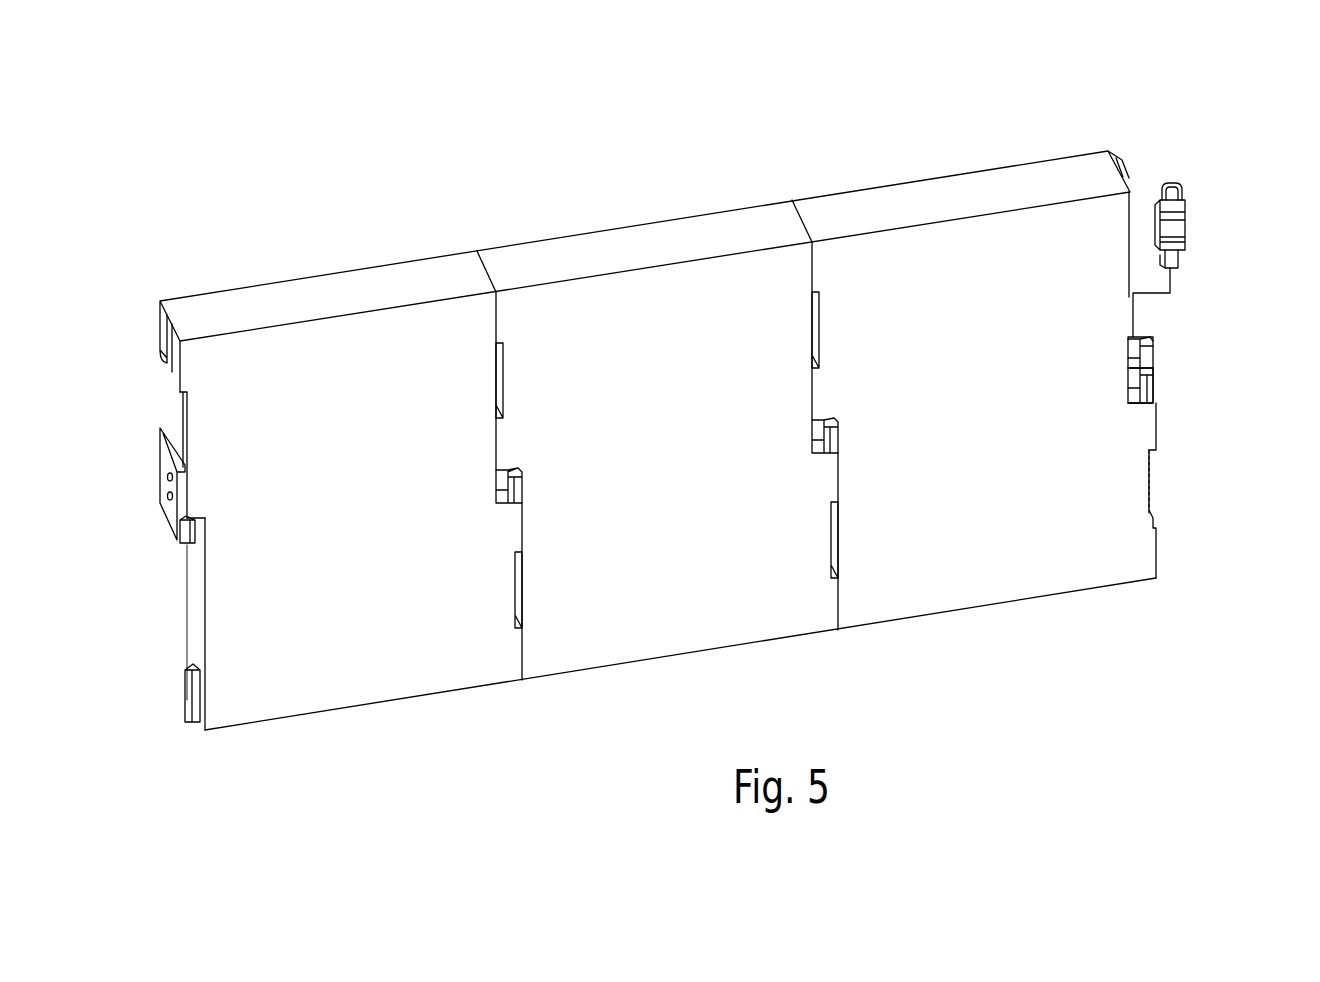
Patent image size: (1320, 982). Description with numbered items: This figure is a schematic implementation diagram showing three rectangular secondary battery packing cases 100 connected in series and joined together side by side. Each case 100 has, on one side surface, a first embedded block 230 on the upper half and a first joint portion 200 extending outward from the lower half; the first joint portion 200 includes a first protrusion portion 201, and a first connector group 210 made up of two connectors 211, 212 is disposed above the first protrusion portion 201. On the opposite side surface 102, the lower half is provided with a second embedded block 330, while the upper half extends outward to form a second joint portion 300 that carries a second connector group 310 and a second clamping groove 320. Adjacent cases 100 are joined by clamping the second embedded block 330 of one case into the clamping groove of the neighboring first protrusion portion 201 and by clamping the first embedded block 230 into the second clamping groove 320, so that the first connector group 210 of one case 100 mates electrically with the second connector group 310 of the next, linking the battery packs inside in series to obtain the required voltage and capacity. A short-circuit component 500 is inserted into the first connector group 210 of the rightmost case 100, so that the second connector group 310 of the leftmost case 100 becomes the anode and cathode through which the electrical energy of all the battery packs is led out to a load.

The case 100 is at (295, 268).
The side surface 102 is at (200, 617).
The first joint portion 200 is at (1262, 309).
The first protrusion portion 201 is at (1140, 487).
The first connector group 210 is at (1200, 297).
The connector 211 is at (1133, 338).
The connector 212 is at (1142, 360).
The first embedded block 230 is at (1128, 168).
The second joint portion 300 is at (88, 580).
The second connector group 310 is at (177, 538).
The second clamping groove 320 is at (168, 347).
The second embedded block 330 is at (184, 688).
The short-circuit component 500 is at (1177, 228).